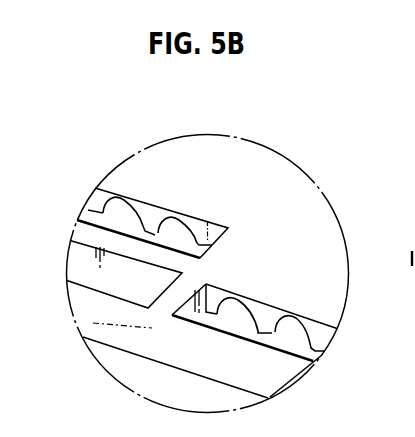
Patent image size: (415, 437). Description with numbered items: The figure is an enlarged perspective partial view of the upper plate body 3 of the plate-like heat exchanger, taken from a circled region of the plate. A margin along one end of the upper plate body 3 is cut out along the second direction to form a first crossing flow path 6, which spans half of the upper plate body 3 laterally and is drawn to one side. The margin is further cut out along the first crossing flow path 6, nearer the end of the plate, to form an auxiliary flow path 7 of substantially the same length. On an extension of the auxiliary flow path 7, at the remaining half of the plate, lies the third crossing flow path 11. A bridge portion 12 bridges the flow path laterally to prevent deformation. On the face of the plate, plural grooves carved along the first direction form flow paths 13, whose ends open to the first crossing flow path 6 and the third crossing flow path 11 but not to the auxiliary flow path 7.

The upper plate body 3 is at (280, 205).
The first crossing flow path 6 is at (88, 211).
The auxiliary flow path 7 is at (76, 279).
The third crossing flow path 11 is at (320, 357).
The bridge portion 12 is at (189, 305).
The flow paths 13 is at (120, 203).